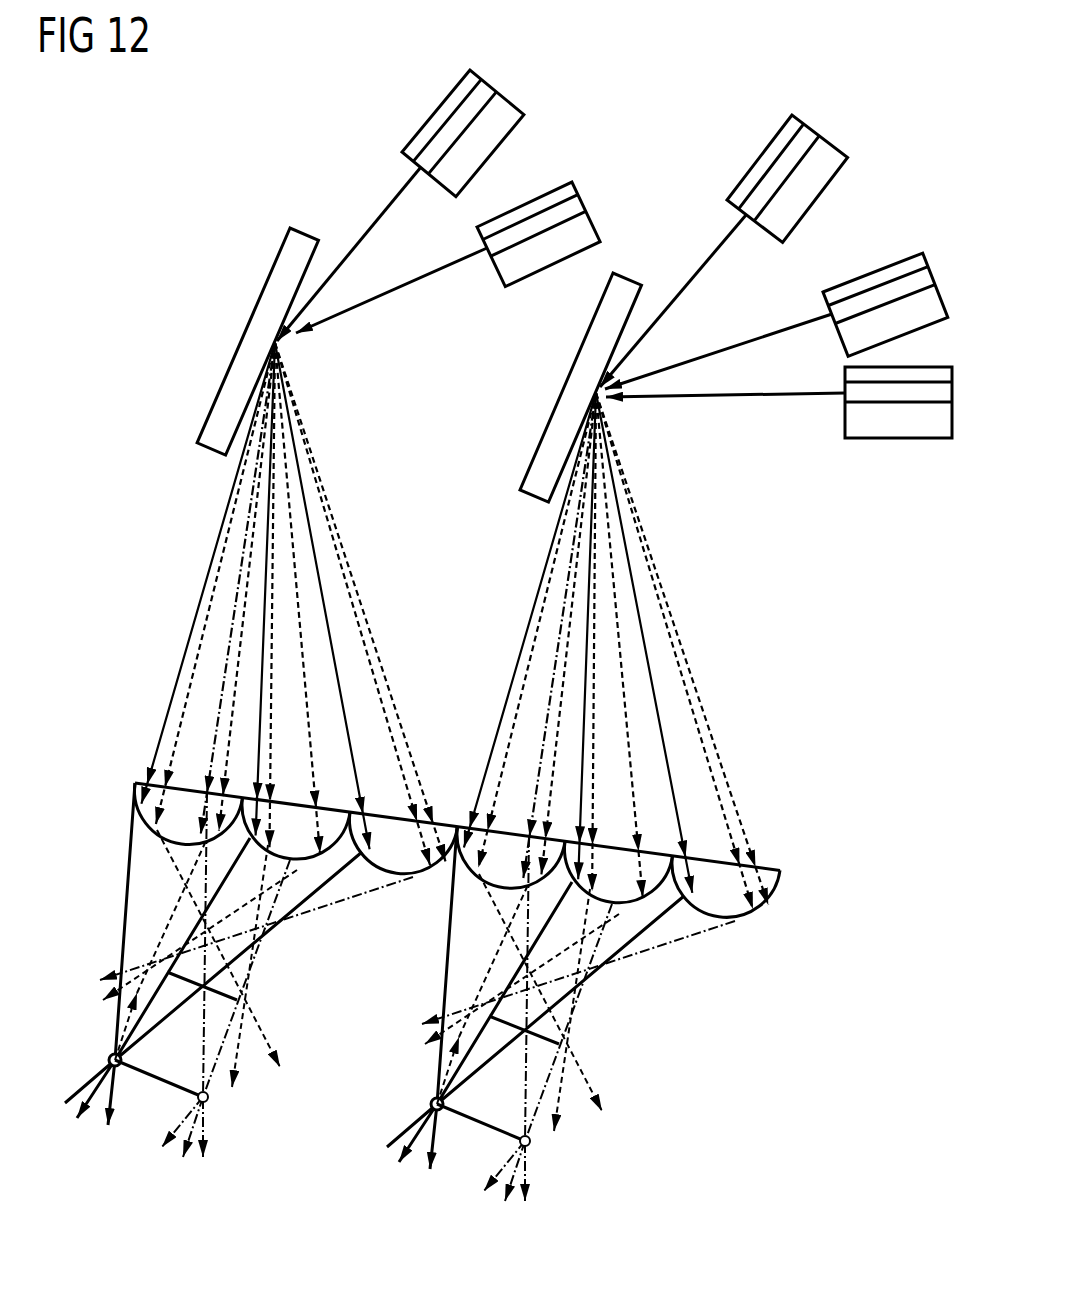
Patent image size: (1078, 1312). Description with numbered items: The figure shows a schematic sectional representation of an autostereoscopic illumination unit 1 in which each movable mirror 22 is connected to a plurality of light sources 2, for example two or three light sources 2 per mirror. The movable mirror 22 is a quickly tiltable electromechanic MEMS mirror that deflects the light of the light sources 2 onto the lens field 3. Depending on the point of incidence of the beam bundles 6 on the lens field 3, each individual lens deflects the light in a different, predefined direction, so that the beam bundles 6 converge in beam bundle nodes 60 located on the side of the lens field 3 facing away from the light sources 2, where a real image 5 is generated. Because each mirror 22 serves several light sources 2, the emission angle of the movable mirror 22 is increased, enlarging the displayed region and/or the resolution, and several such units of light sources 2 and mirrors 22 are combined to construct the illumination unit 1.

The illumination unit 1 is at (140, 172).
The light source 2 is at (515, 130).
The movable mirror 22 is at (240, 343).
The lens field 3 is at (133, 786).
The beam bundle 6 is at (120, 927).
The beam bundle node 60 is at (106, 1057).
The real image 5 is at (160, 1080).